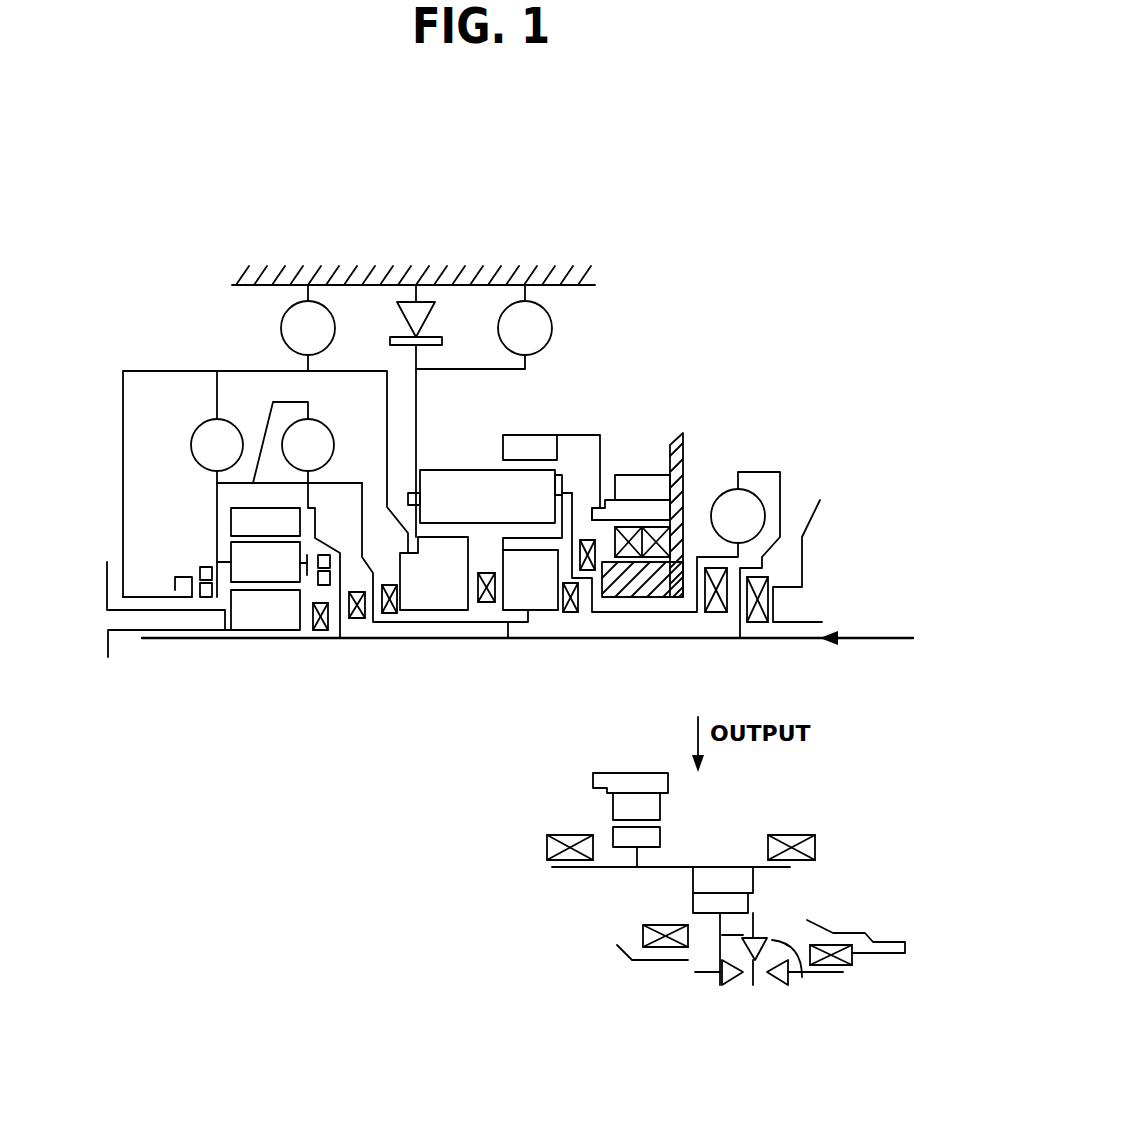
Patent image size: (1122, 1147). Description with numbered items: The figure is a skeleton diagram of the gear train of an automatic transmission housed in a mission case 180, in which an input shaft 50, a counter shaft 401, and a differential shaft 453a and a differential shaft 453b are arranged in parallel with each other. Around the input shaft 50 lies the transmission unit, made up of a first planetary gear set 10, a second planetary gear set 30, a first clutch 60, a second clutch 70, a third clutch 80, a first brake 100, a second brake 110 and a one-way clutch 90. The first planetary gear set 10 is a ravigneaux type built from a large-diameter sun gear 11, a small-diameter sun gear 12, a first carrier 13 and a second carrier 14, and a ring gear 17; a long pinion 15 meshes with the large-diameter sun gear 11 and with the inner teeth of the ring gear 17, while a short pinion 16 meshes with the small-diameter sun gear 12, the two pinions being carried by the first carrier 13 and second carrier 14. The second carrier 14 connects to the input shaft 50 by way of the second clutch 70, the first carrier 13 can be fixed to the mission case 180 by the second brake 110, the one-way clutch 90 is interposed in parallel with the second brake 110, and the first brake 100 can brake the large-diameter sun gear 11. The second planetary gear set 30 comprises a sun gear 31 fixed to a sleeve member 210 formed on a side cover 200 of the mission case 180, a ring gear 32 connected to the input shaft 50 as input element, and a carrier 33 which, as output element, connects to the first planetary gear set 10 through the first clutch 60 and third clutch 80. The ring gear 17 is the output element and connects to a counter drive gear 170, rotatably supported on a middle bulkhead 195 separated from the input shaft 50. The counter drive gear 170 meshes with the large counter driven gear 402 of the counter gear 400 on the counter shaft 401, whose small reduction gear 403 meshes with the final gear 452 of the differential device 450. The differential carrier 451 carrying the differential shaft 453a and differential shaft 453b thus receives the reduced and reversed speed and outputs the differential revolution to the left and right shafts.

The first planetary gear set 10 is at (452, 648).
The large-diameter sun gear 11 is at (413, 598).
The small-diameter sun gear 12 is at (543, 603).
The first carrier 13 is at (418, 447).
The second carrier 14 is at (578, 505).
The long pinion 15 is at (468, 483).
The short pinion 16 is at (512, 535).
The ring gear 17 is at (530, 448).
The second planetary gear set 30 is at (250, 642).
The sun gear 31 is at (280, 622).
The ring gear 32 is at (230, 522).
The carrier 33 is at (217, 552).
The input shaft 50 is at (885, 640).
The first clutch 60 is at (325, 423).
The second clutch 70 is at (722, 492).
The third clutch 80 is at (200, 425).
The one-way clutch 90 is at (427, 300).
The first brake 100 is at (280, 330).
The second brake 110 is at (553, 330).
The counter drive gear 170 is at (638, 487).
The mission case 180 is at (522, 272).
The middle bulkhead 195 is at (683, 437).
The side cover 200 is at (105, 560).
The sleeve member 210 is at (148, 640).
The counter gear 400 is at (572, 814).
The counter shaft 401 is at (562, 870).
The counter driven gear 402 is at (660, 836).
The reduction gear 403 is at (752, 882).
The differential device 450 is at (755, 1012).
The differential carrier 451 is at (773, 937).
The final gear 452 is at (693, 903).
The differential shaft 453a is at (702, 972).
The differential shaft 453b is at (830, 975).